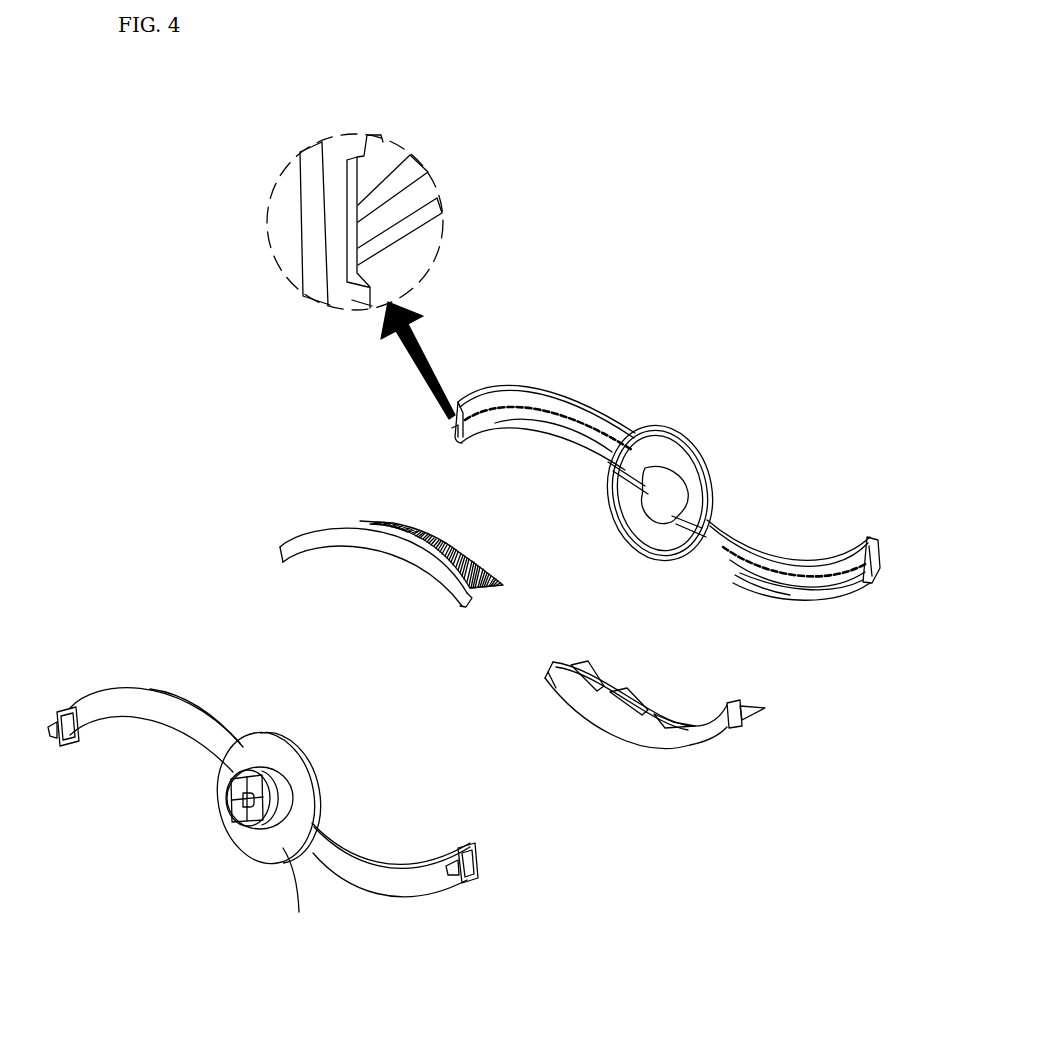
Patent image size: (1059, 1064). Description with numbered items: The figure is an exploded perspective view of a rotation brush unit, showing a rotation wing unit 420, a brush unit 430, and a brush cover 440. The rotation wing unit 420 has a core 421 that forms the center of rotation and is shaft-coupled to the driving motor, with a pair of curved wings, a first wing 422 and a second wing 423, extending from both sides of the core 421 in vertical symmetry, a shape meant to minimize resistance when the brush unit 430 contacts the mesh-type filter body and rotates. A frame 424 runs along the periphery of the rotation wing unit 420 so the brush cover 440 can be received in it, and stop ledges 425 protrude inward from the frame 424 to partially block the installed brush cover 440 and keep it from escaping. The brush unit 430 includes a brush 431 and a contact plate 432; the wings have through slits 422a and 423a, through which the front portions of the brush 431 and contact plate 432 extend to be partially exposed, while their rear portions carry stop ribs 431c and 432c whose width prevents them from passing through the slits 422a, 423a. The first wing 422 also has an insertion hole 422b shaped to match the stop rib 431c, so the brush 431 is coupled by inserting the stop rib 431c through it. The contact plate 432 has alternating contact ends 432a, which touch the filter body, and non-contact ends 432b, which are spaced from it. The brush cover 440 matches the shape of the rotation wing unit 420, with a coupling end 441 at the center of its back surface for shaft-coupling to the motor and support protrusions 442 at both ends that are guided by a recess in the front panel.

The rotation wing unit 420 is at (513, 390).
The core 421 is at (680, 467).
The first wing 422 is at (493, 400).
The through slit 422a is at (392, 213).
The insertion hole 422b is at (347, 232).
The second wing 423 is at (837, 567).
The through slit 423a is at (773, 573).
The frame 424 is at (330, 172).
The stop ledge 425 is at (750, 580).
The brush unit 430 is at (522, 587).
The brush 431 is at (391, 552).
The stop rib 431c is at (338, 535).
The contact plate 432 is at (590, 690).
The contact end 432a is at (587, 672).
The non-contact end 432b is at (610, 697).
The stop rib 432c is at (555, 688).
The brush cover 440 is at (262, 835).
The coupling end 441 is at (262, 828).
The support protrusion 442 is at (58, 743).